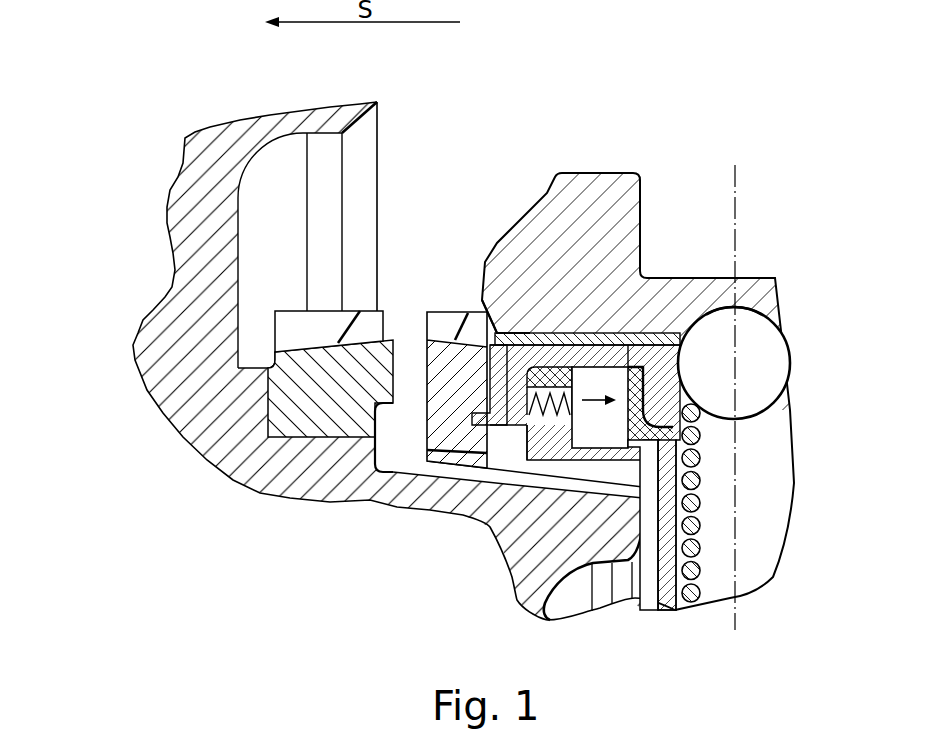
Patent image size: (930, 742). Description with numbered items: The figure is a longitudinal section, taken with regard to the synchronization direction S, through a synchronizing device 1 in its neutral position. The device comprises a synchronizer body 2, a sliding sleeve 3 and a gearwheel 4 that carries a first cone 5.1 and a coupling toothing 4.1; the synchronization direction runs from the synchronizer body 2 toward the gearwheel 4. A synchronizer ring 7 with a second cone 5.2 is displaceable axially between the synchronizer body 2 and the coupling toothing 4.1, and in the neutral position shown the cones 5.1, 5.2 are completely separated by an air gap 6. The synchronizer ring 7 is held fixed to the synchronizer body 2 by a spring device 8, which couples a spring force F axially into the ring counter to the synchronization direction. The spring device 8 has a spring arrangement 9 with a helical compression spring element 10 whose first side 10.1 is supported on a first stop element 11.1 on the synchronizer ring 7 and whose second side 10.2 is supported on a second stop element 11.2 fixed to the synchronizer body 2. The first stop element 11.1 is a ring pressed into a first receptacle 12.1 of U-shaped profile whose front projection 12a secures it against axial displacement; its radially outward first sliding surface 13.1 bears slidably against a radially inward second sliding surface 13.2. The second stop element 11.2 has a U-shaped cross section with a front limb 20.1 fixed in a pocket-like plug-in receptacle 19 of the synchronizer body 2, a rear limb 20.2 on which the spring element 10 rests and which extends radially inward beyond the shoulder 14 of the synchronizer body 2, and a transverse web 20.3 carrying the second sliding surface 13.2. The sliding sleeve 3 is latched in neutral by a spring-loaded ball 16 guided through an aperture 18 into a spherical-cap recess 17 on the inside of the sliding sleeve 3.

The synchronizing device 1 is at (106, 178).
The synchronizer body 2 is at (667, 587).
The sliding sleeve 3 is at (603, 174).
The gearwheel 4 is at (184, 138).
The coupling toothing 4.1 is at (293, 323).
The first cone 5.1 is at (472, 478).
The second cone 5.2 is at (432, 470).
The air gap 6 is at (412, 466).
The synchronizer ring 7 is at (416, 434).
The spring device 8 is at (540, 452).
The spring arrangement 9 is at (540, 430).
The spring element 10 is at (490, 515).
The first side 10.1 is at (585, 570).
The second side 10.2 is at (497, 467).
The first stop element 11.1 is at (617, 413).
The second stop element 11.2 is at (643, 353).
The first receptacle 12.1 is at (633, 567).
The front projection 12a is at (670, 443).
The first sliding surface 13.1 is at (614, 356).
The second sliding surface 13.2 is at (582, 377).
The shoulder 14 is at (507, 325).
The ball 16 is at (760, 335).
The recess 17 is at (738, 302).
The aperture 18 is at (665, 342).
The plug-in receptacle 19 is at (633, 353).
The front limb 20.1 is at (703, 414).
The rear limb 20.2 is at (505, 400).
The transverse web 20.3 is at (628, 343).